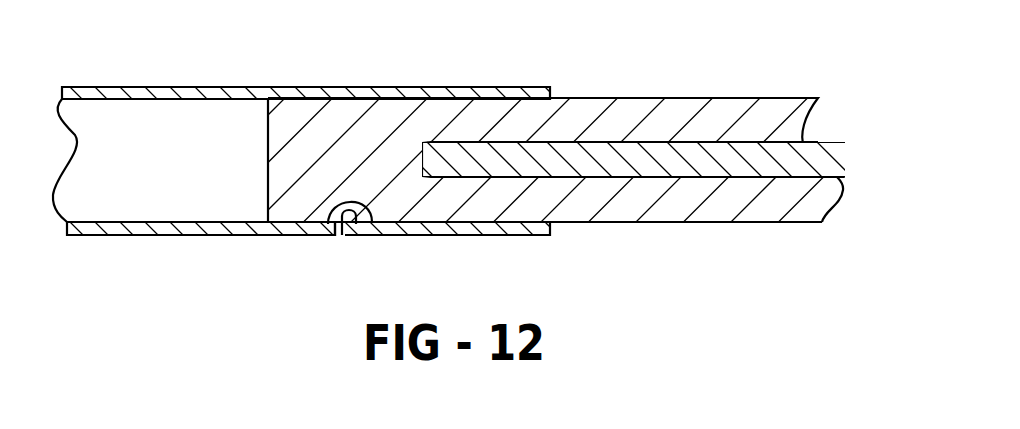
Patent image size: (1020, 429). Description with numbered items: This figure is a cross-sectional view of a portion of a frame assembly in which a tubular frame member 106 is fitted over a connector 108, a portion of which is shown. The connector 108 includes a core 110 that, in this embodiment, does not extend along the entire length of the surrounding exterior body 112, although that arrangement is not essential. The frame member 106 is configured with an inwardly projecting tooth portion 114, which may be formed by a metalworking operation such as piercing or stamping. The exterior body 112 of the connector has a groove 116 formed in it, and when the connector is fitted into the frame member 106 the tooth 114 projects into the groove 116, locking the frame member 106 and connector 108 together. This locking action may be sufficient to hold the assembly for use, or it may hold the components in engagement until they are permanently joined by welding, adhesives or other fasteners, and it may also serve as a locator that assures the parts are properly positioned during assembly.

The frame member 106 is at (203, 87).
The connector 108 is at (779, 96).
The core 110 is at (778, 158).
The exterior body 112 is at (597, 108).
The tooth portion 114 is at (347, 234).
The groove 116 is at (338, 205).